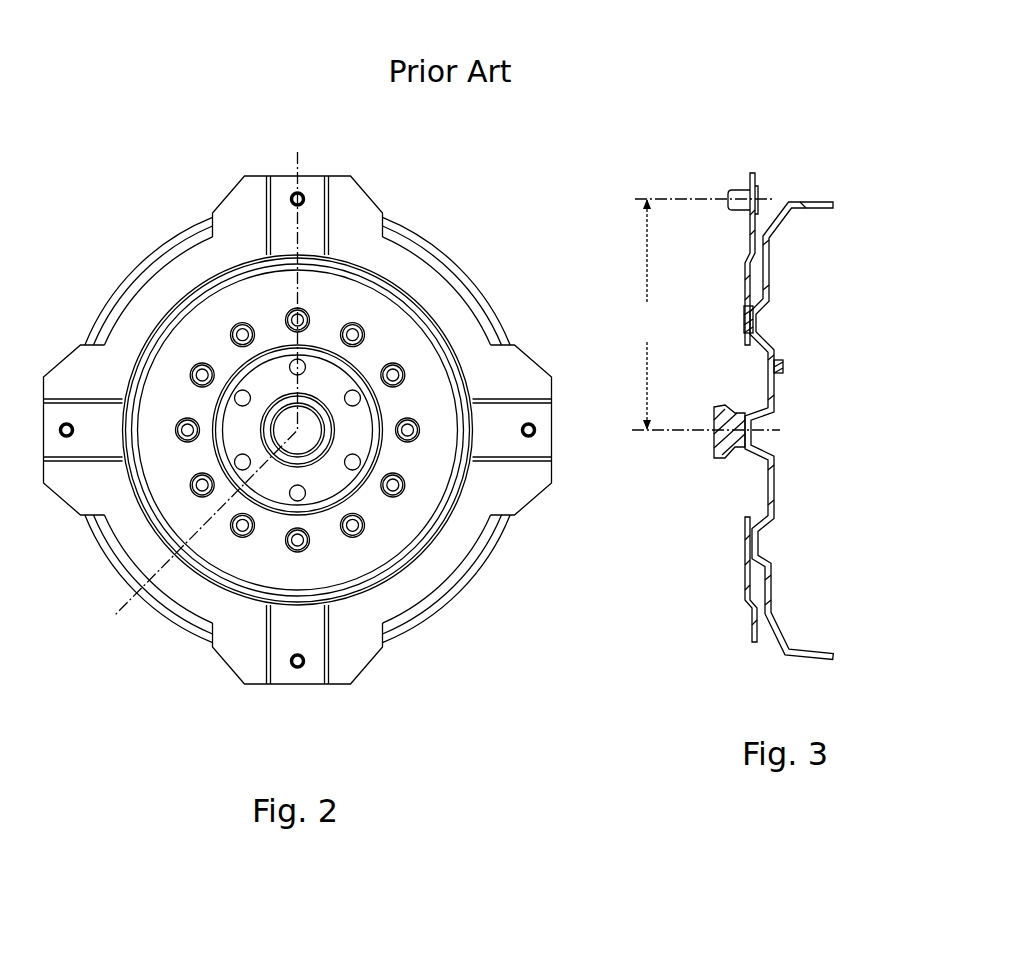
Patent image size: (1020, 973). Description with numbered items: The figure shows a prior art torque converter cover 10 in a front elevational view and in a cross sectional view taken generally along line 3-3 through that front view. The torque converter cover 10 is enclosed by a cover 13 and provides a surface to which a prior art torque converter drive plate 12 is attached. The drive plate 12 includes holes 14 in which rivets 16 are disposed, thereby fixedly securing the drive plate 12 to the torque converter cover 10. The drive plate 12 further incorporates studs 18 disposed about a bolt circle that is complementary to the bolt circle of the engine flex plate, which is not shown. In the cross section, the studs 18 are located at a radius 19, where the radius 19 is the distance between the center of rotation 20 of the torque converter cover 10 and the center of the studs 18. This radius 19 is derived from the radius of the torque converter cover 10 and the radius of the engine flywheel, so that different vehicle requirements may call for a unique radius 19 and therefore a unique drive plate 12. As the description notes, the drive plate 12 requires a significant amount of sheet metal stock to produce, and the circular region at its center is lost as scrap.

In FIG. 2, the section line 3- 3 is at (298, 152).
In FIG. 2, the torque converter cover 10 is at (436, 655).
In FIG. 3, the torque converter cover 10 is at (775, 148).
In FIG. 2, the torque converter drive plate 12 is at (355, 212).
In FIG. 3, the torque converter drive plate 12 is at (750, 233).
In FIG. 2, the cover 13 is at (452, 267).
In FIG. 3, the cover 13 is at (783, 657).
In FIG. 2, the holes 14 is at (197, 370).
In FIG. 3, the holes 14 is at (745, 308).
In FIG. 2, the rivets 16 is at (243, 323).
In FIG. 3, the rivets 16 is at (749, 322).
In FIG. 2, the studs 18 is at (534, 425).
In FIG. 3, the studs 18 is at (740, 195).
In FIG. 3, the radius 19 is at (706, 314).
In FIG. 3, the center of rotation 20 is at (714, 432).